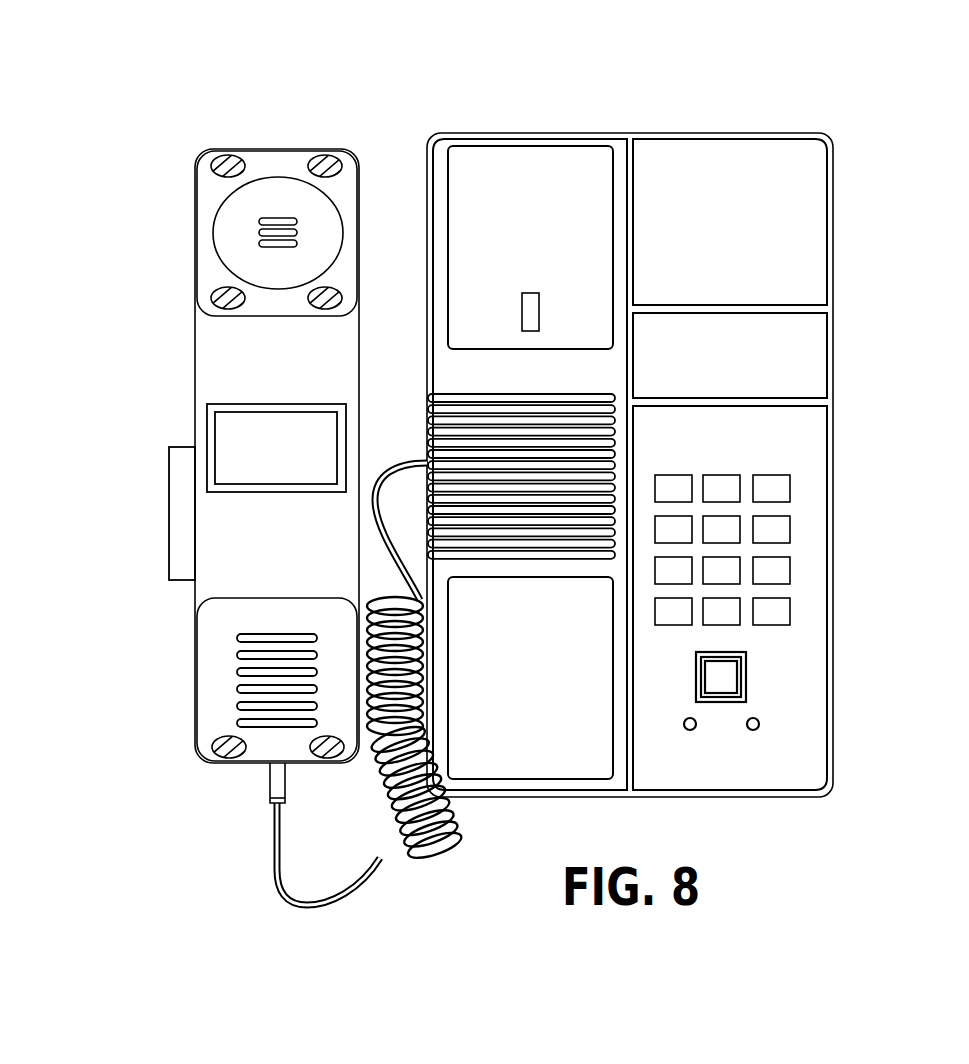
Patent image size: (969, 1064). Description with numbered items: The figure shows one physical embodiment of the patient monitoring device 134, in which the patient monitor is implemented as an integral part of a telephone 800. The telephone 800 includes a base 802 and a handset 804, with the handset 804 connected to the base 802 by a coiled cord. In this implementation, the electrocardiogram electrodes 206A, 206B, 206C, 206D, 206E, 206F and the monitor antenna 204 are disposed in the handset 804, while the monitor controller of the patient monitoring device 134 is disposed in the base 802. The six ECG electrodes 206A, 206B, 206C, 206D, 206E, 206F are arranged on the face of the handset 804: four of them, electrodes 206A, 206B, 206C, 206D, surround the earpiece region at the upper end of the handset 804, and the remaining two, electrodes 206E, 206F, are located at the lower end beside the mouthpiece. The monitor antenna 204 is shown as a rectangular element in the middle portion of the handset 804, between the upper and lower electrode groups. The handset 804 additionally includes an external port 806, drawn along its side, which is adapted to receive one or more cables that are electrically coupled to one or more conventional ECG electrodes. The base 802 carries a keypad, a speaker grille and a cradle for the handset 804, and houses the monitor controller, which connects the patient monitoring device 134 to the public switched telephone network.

The telephone 800 is at (553, 84).
The base 802 is at (833, 392).
The patient monitoring device 134 is at (130, 163).
The handset 804 is at (195, 368).
The monitor antenna 204 is at (213, 427).
The external port 806 is at (168, 538).
The ECG electrode 206A is at (229, 156).
The ECG electrode 206B is at (320, 156).
The ECG electrode 206C is at (213, 298).
The ECG electrode 206D is at (343, 300).
The ECG electrode 206E is at (230, 760).
The ECG electrode 206F is at (321, 760).